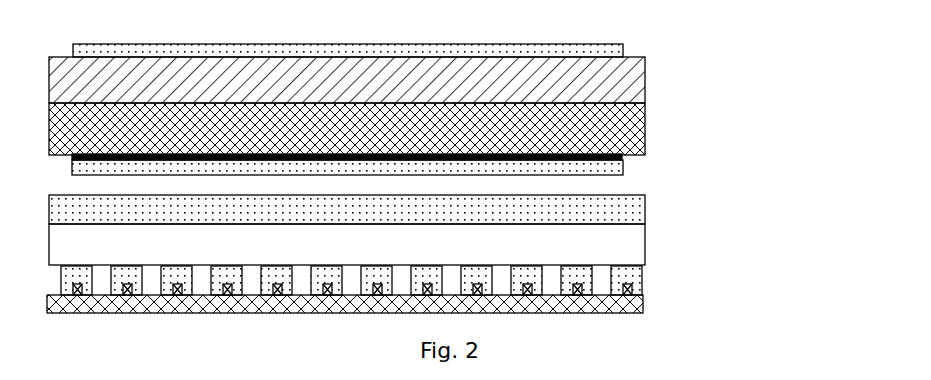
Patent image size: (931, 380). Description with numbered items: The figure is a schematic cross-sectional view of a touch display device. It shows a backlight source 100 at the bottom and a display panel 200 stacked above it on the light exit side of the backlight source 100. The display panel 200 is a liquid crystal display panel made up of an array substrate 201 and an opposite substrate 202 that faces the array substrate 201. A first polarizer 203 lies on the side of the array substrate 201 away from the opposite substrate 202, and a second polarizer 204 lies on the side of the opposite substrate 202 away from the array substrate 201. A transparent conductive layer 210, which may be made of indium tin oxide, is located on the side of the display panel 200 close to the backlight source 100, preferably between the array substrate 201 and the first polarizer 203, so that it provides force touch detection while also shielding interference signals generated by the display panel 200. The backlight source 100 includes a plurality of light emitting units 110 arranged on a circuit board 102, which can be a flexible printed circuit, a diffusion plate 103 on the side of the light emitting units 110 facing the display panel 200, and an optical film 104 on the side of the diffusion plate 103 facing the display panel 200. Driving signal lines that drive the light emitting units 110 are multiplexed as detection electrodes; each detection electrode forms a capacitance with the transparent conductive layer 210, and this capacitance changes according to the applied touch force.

The backlight source 100 is at (742, 213).
The circuit board 102 is at (641, 302).
The diffusion plate 103 is at (593, 247).
The optical film 104 is at (595, 217).
The light emitting units 110 is at (641, 277).
The display panel 200 is at (733, 77).
The array substrate 201 is at (600, 130).
The opposite substrate 202 is at (593, 77).
The first polarizer 203 is at (597, 167).
The second polarizer 204 is at (613, 51).
The transparent conductive layer 210 is at (618, 156).